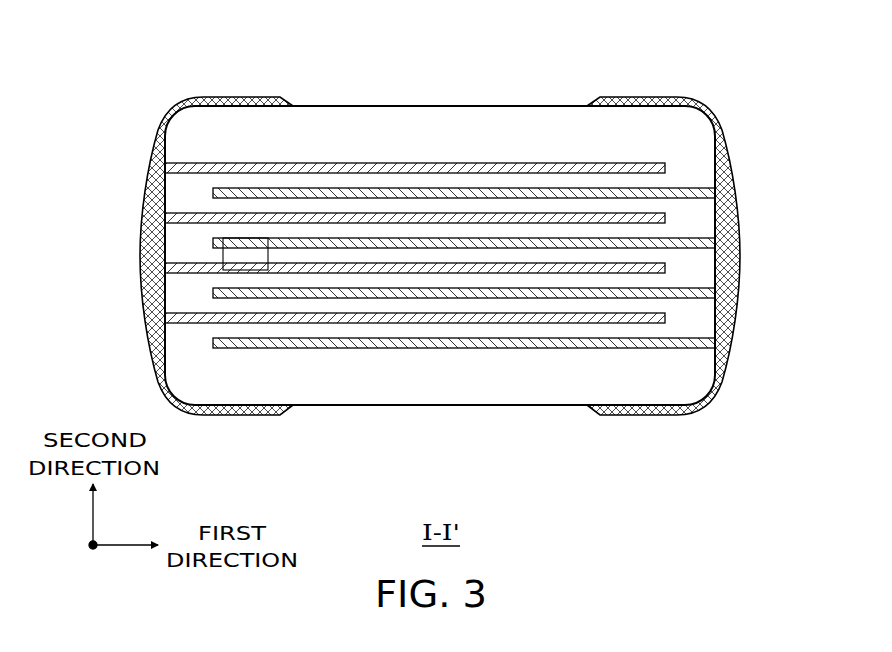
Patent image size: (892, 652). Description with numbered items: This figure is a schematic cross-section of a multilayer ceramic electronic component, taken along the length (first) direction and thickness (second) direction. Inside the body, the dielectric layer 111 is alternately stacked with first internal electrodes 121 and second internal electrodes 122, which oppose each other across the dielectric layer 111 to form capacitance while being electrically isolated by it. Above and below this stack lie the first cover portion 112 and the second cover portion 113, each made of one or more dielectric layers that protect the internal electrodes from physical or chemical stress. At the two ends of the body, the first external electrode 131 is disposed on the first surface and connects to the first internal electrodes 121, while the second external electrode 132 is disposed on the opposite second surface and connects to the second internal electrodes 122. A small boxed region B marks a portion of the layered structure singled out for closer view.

The enlarged region B is at (241, 241).
The dielectric layer 111 is at (510, 180).
The first cover portion 112 is at (311, 133).
The second cover portion 113 is at (390, 406).
The first internal electrode 121 is at (377, 166).
The second internal electrode 122 is at (443, 197).
The first external electrode 131 is at (149, 260).
The second external electrode 132 is at (740, 260).